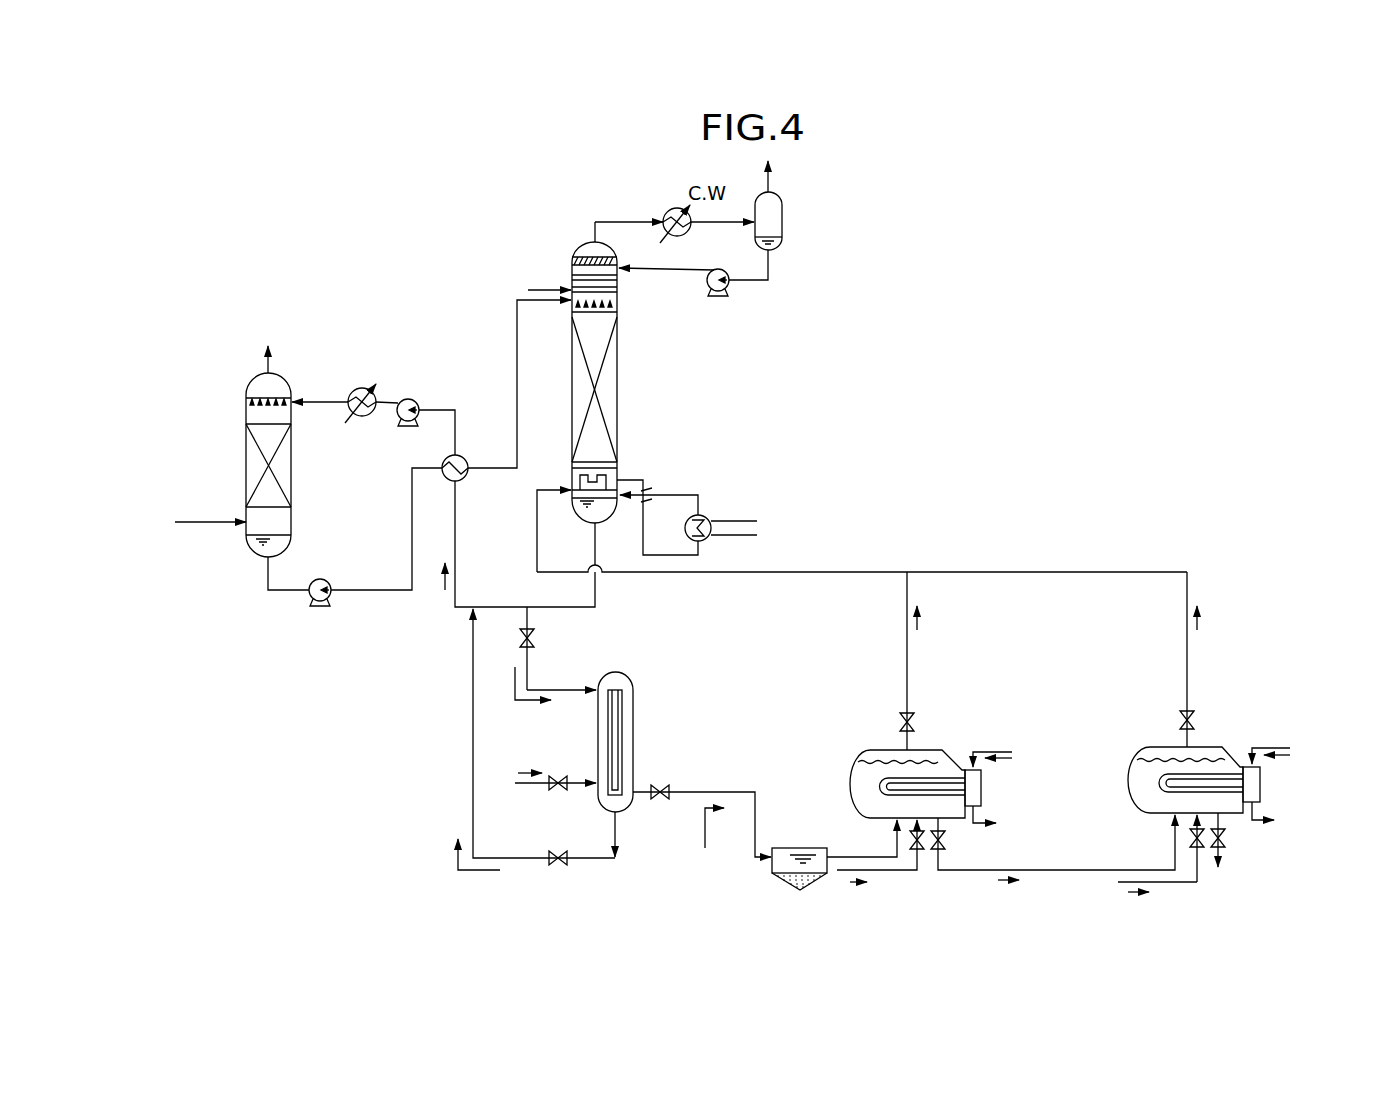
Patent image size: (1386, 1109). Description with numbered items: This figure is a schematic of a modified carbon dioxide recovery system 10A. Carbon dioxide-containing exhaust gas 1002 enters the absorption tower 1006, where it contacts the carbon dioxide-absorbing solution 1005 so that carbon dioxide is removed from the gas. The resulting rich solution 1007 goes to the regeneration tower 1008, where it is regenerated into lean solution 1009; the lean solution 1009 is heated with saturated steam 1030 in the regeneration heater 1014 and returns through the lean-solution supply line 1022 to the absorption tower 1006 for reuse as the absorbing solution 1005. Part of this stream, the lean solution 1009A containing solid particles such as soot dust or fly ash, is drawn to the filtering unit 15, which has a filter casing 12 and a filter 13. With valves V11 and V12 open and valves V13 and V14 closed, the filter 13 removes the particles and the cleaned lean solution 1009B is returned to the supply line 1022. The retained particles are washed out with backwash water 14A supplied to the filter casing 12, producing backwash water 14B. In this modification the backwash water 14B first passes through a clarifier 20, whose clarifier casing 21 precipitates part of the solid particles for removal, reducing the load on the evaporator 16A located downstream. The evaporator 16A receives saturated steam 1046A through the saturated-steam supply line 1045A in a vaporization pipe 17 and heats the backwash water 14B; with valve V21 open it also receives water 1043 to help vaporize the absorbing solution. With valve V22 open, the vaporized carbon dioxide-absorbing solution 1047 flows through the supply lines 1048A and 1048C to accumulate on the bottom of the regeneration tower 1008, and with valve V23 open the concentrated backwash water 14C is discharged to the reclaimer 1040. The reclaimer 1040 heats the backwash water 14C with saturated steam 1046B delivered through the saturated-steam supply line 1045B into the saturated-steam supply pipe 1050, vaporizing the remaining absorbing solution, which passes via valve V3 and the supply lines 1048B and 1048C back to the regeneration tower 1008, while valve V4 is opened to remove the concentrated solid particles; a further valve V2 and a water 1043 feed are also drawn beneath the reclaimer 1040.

The CO2 recovery system 10A is at (1017, 205).
The CO2-containing exhaust gas 1002 is at (212, 522).
The CO2-absorbing solution 1005 is at (332, 402).
The absorption tower 1006 is at (282, 373).
The rich solution 1007 is at (528, 290).
The regeneration tower 1008 is at (590, 243).
The lean solution 1009 is at (445, 590).
The lean solution 1009A is at (515, 677).
The lean solution 1009B is at (458, 858).
The regeneration heater 1014 is at (708, 514).
The lean-solution supply line 1022 is at (500, 607).
The saturated steam 1030 is at (760, 521).
The reclaimer 1040 is at (1161, 751).
The water 1043 is at (850, 886).
The saturated-steam supply line 1045A is at (973, 751).
The saturated-steam supply line 1045B is at (1255, 748).
The saturated steam 1046A is at (1000, 758).
The saturated steam 1046B is at (1282, 757).
The vaporized CO2-absorbing solution 1047 is at (917, 618).
The vaporized CO2-absorbing solution supply line 1048A is at (907, 680).
The vaporized CO2-absorbing solution supply line 1048B is at (1187, 675).
The vaporized CO2-absorbing solution supply line 1048C is at (878, 572).
The saturated-steam supply pipe 1050 is at (1158, 785).
The filter casing 12 is at (636, 706).
The filter 13 is at (666, 742).
The backwash water 14A is at (518, 773).
The backwash water 14B is at (705, 848).
The backwash water 14C is at (1000, 882).
The filtering unit 15 is at (680, 719).
The evaporator 16A is at (872, 758).
The vaporization pipe 17 is at (880, 786).
The clarifier 20 is at (778, 898).
The clarifier casing 21 is at (827, 848).
The valve V11 is at (540, 639).
The valve V12 is at (556, 866).
The valve V13 is at (556, 795).
The valve V14 is at (660, 800).
The valve V21 is at (922, 852).
The valve V22 is at (917, 722).
The valve V23 is at (948, 843).
The valve V2 is at (1203, 852).
The valve V3 is at (1195, 720).
The valve V4 is at (1225, 842).